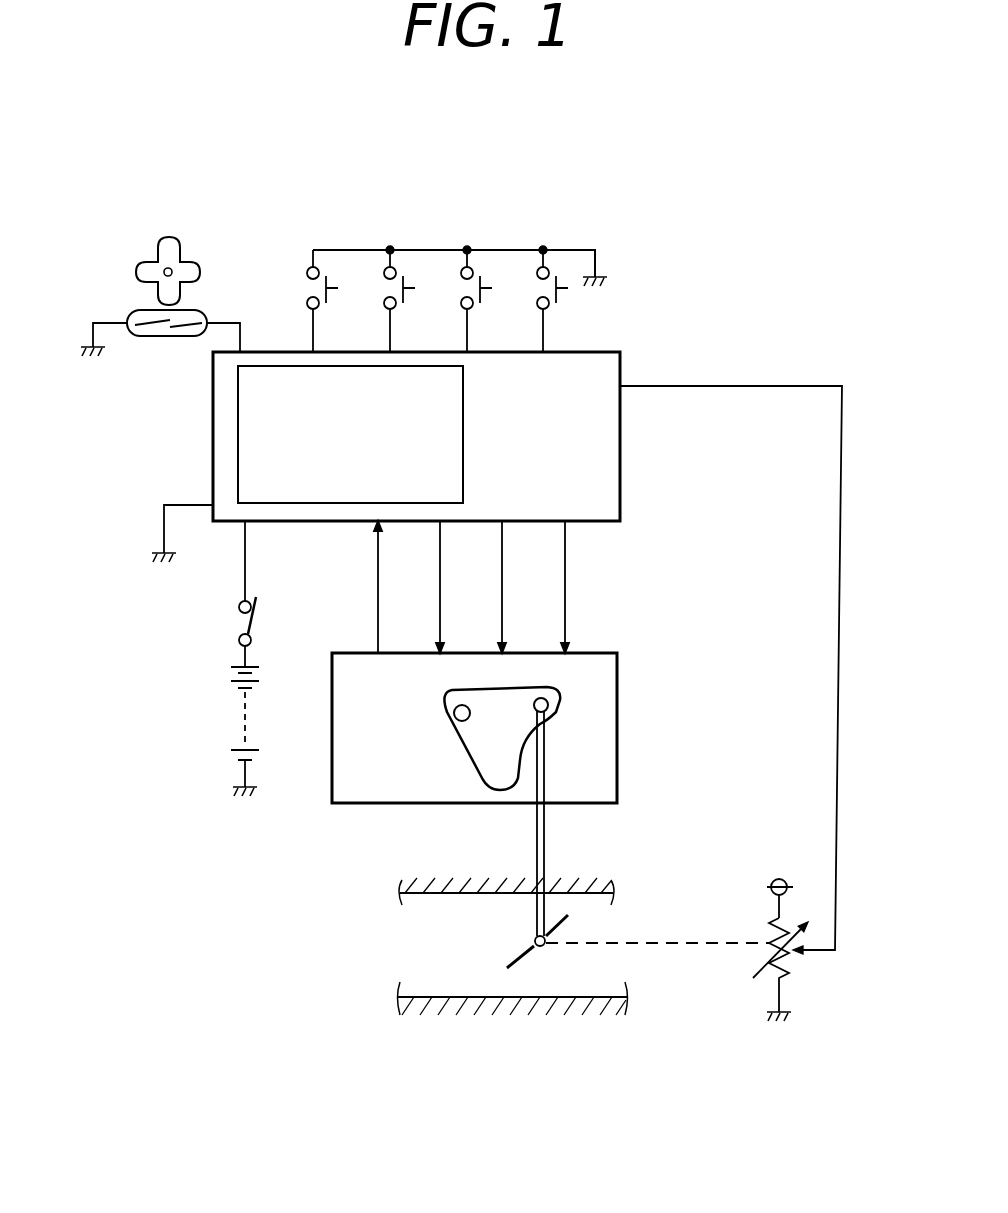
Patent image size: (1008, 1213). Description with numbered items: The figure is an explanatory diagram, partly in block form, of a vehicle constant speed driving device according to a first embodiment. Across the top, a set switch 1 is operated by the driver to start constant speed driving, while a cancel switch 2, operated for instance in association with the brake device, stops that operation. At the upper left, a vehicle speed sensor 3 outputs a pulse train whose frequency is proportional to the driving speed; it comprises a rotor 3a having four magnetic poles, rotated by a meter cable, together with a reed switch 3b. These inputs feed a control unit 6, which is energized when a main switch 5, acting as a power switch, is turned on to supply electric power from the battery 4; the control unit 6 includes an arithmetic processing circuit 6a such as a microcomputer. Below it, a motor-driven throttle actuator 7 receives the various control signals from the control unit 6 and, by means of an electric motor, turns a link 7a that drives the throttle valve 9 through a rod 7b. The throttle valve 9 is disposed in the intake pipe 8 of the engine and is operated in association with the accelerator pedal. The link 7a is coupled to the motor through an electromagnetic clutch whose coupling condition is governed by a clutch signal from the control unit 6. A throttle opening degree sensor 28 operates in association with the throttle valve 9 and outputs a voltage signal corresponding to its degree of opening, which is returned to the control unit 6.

The set switch 1 is at (566, 266).
The cancel switch 2 is at (332, 266).
The vehicle speed sensor 3 is at (155, 300).
The rotor 3a is at (182, 253).
The reed switch 3b is at (170, 337).
The battery 4 is at (262, 683).
The main switch 5 is at (253, 627).
The control unit 6 is at (410, 457).
The arithmetic processing circuit 6a is at (237, 442).
The motor-driven throttle actuator 7 is at (491, 793).
The link 7a is at (502, 775).
The rod 7b is at (546, 840).
The intake pipe 8 is at (450, 1000).
The throttle valve 9 is at (530, 952).
The throttle opening degree sensor 28 is at (762, 982).